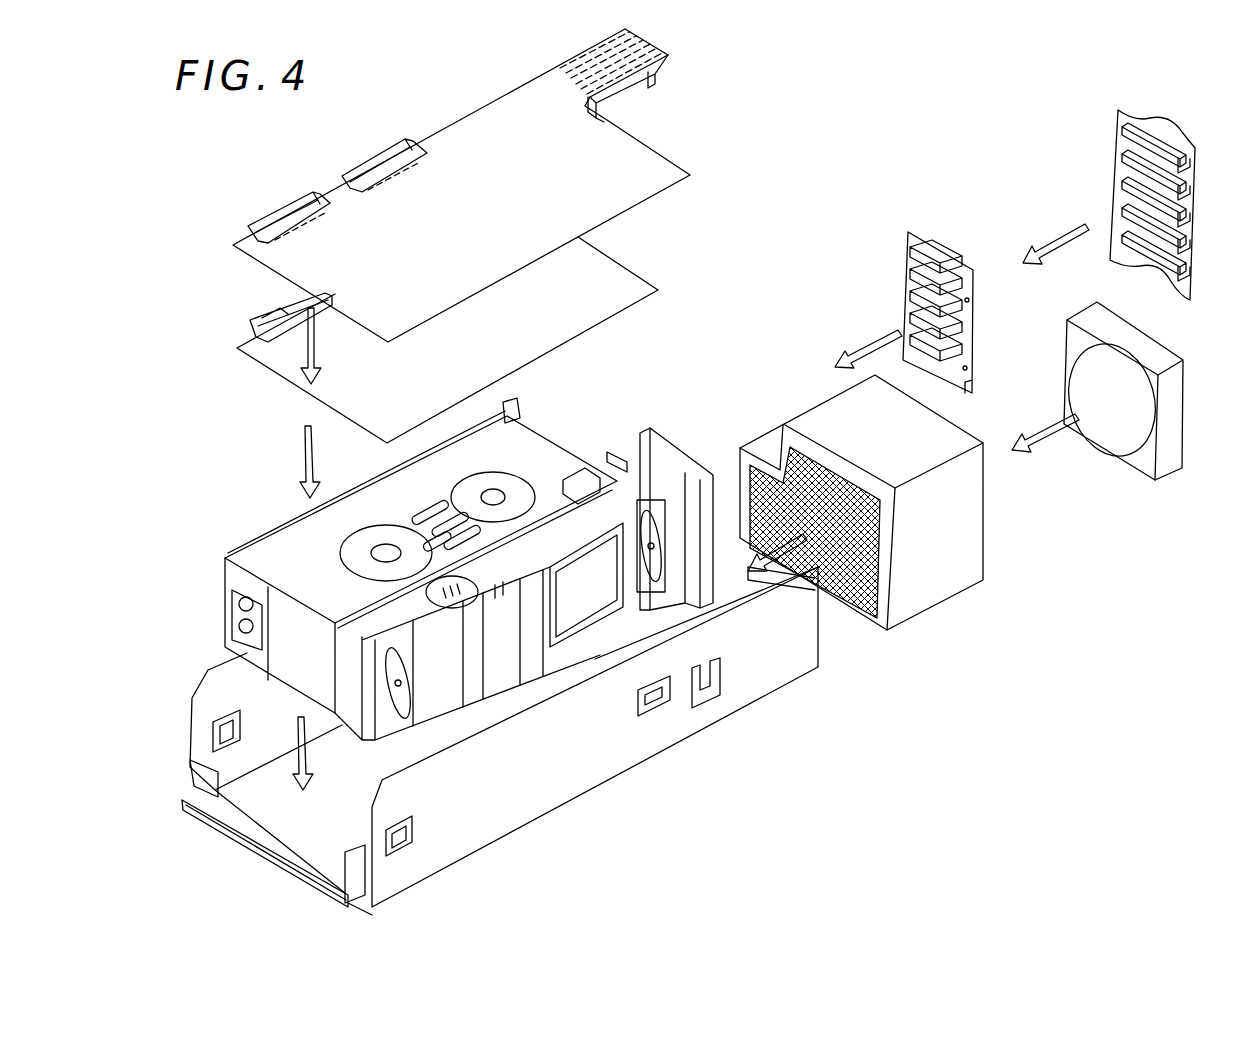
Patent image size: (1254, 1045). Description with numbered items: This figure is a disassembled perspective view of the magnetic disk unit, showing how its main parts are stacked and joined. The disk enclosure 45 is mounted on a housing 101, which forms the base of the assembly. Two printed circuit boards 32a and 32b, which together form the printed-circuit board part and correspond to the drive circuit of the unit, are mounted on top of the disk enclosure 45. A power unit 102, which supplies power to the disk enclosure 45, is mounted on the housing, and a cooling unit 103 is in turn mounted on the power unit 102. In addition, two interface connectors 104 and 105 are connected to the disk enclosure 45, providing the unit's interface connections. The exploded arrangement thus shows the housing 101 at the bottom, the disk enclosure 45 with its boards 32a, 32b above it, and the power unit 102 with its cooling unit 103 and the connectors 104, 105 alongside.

The printed circuit board 32a is at (682, 177).
The printed circuit board 32b is at (652, 292).
The disk enclosure 45 is at (272, 500).
The housing 101 is at (558, 790).
The power unit 102 is at (917, 605).
The cooling unit 103 is at (1177, 470).
The interface connector 104 is at (930, 233).
The interface connector 105 is at (1187, 287).